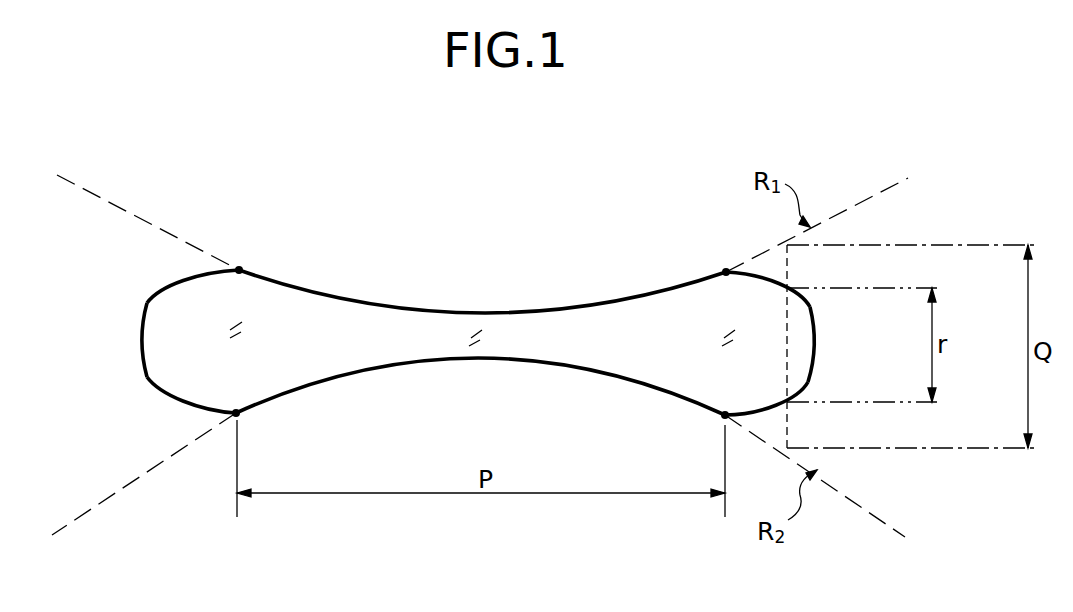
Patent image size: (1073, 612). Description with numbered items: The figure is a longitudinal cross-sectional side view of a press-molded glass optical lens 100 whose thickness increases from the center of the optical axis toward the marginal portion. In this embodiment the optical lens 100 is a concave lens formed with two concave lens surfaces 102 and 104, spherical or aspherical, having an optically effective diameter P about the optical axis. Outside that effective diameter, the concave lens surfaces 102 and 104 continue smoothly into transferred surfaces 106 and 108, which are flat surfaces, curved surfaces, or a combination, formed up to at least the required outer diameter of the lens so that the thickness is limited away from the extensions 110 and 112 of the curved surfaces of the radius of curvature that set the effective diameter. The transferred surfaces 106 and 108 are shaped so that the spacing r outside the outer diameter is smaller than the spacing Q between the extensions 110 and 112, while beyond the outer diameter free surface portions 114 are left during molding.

The optical lens 100 is at (453, 243).
The concave lens surface 102 is at (482, 315).
The concave lens surface 104 is at (473, 360).
The transferred surface 106 is at (192, 275).
The transferred surface 108 is at (162, 392).
The extension of curved surface 110 is at (147, 220).
The extension of curved surface 112 is at (90, 505).
The free surface portion 114 is at (126, 290).